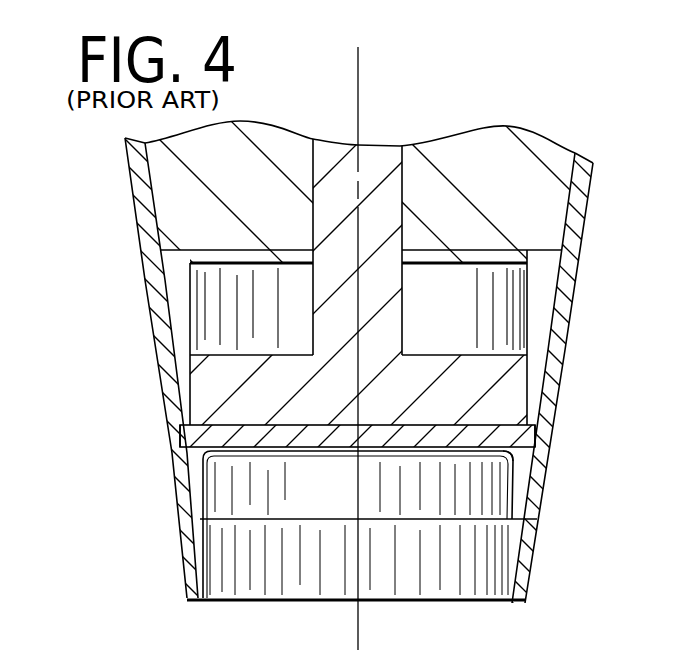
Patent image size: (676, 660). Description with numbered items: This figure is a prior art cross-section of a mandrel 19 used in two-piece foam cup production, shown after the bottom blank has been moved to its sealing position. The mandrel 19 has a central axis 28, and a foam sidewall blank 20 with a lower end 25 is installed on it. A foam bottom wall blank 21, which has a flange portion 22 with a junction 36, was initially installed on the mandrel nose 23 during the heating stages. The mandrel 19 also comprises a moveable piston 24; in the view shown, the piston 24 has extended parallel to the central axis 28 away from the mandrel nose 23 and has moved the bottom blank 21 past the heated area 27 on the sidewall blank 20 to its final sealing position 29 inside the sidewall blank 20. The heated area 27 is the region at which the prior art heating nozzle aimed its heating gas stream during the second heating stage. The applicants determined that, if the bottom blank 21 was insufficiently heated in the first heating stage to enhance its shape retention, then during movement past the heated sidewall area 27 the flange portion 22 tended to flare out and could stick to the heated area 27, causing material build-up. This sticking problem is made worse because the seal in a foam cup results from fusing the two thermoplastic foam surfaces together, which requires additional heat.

The mandrel 19 is at (289, 153).
The foam sidewall blank 20 is at (140, 215).
The foam bottom wall blank 21 is at (336, 438).
The flange portion 22 is at (200, 498).
The mandrel nose 23 is at (176, 311).
The moveable piston 24 is at (503, 393).
The lower end 25 is at (194, 601).
The heated area 27 is at (178, 442).
The central axis 28 is at (358, 136).
The final sealing position 29 is at (200, 515).
The junction 36 is at (193, 490).